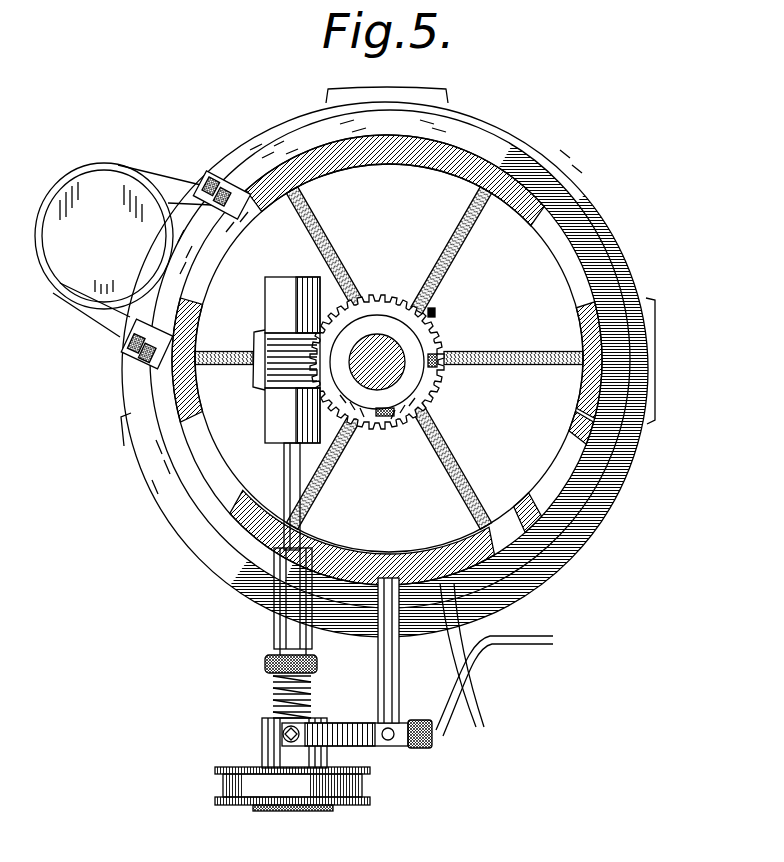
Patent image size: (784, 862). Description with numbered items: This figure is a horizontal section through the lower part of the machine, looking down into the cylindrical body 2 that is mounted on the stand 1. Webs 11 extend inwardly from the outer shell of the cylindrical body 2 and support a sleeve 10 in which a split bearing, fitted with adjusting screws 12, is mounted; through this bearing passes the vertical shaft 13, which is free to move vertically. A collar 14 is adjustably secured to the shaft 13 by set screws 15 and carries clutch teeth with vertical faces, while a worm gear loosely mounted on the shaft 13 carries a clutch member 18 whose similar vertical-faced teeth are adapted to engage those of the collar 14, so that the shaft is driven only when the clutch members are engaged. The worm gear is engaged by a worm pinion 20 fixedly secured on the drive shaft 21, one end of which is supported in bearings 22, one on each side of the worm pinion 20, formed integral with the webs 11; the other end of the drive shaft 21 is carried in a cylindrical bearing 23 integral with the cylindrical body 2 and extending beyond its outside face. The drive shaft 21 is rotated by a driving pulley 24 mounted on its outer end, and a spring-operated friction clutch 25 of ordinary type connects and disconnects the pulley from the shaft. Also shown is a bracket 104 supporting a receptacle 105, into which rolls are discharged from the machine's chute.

The stand 1 is at (172, 480).
The cylindrical body 2 is at (585, 246).
The sleeve 10 is at (440, 352).
The webs 11 is at (318, 214).
The adjusting screws 12 is at (650, 350).
The shaft 13 is at (377, 362).
The collar 14 is at (405, 378).
The set screws 15 is at (405, 418).
The clutch member 18 is at (430, 330).
The worm pinion 20 is at (263, 388).
The drive shaft 21 is at (292, 465).
The bearings 22 is at (293, 300).
The cylindrical bearing 23 is at (293, 596).
The driving pulley 24 is at (255, 786).
The spring-operated friction clutch 25 is at (283, 752).
The bracket 104 is at (130, 338).
The receptacle 105 is at (71, 271).